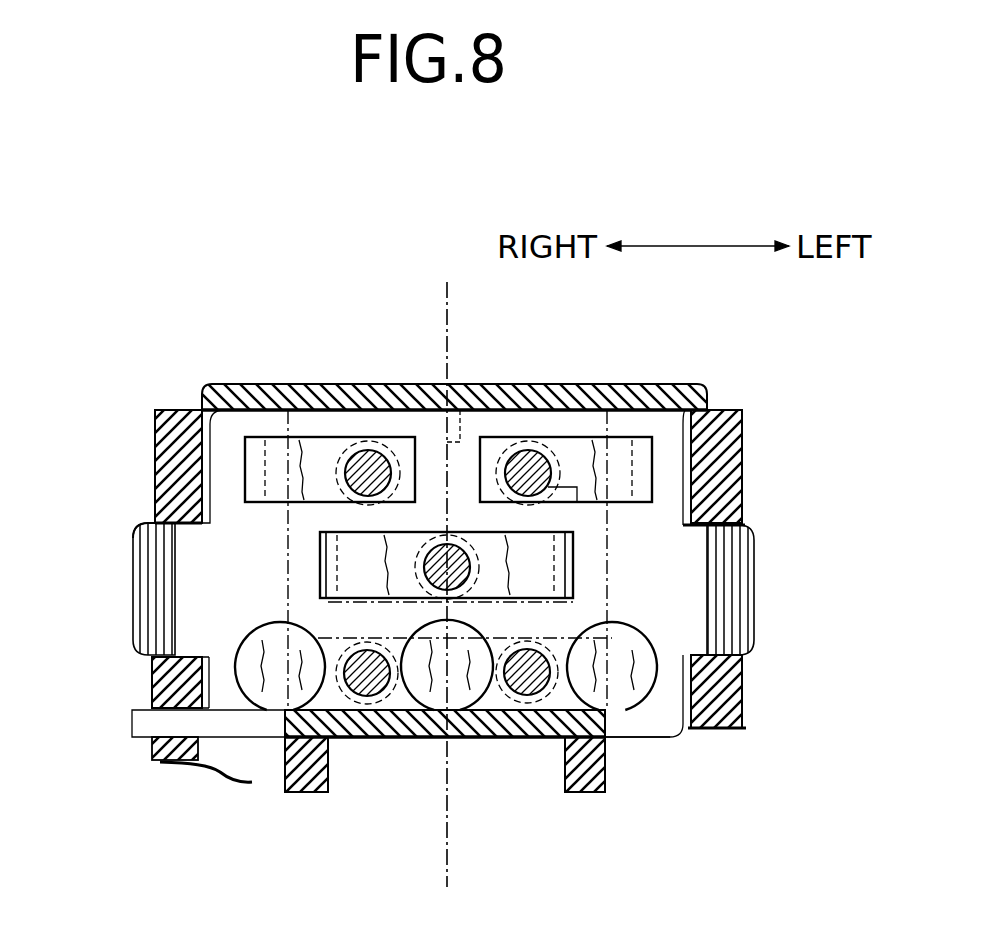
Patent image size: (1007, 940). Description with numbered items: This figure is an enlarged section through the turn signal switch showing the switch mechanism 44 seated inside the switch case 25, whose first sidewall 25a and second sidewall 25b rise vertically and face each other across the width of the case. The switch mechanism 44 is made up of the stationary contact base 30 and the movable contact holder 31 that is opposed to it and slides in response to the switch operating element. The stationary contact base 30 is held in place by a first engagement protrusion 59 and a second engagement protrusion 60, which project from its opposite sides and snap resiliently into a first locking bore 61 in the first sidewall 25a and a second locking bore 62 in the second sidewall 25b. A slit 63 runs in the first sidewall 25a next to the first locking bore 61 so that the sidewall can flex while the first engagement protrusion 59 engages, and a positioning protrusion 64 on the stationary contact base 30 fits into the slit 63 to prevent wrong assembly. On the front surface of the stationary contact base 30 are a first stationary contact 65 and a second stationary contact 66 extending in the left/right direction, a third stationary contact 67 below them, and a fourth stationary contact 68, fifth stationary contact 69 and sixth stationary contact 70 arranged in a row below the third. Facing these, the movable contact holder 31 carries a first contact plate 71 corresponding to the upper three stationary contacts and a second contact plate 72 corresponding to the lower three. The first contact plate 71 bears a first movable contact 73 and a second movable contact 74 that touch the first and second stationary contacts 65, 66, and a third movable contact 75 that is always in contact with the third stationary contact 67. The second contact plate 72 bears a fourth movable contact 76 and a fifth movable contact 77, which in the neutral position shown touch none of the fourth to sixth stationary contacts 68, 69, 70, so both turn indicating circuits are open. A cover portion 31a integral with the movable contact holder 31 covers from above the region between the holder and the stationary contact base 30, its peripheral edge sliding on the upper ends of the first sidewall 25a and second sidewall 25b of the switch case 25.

The switch case 25 is at (439, 424).
The first sidewall 25a is at (160, 483).
The second sidewall 25b is at (728, 481).
The stationary contact base 30 is at (230, 427).
The movable contact holder 31 is at (417, 742).
The cover portion 31a is at (699, 398).
The switch mechanism 44 is at (657, 745).
The first engagement protrusion 59 is at (143, 622).
The second engagement protrusion 60 is at (740, 570).
The first locking bore 61 is at (145, 540).
The second locking bore 62 is at (721, 647).
The slit 63 is at (165, 730).
The positioning protrusion 64 is at (132, 727).
The first stationary contact 65 is at (312, 443).
The second stationary contact 66 is at (620, 440).
The third stationary contact 67 is at (348, 548).
The fourth stationary contact 68 is at (275, 703).
The fifth stationary contact 69 is at (457, 697).
The sixth stationary contact 70 is at (617, 707).
The first contact plate 71 is at (468, 383).
The second contact plate 72 is at (548, 625).
The first movable contact 73 is at (370, 470).
The second movable contact 74 is at (530, 468).
The third movable contact 75 is at (467, 567).
The fourth movable contact 76 is at (367, 688).
The fifth movable contact 77 is at (522, 688).